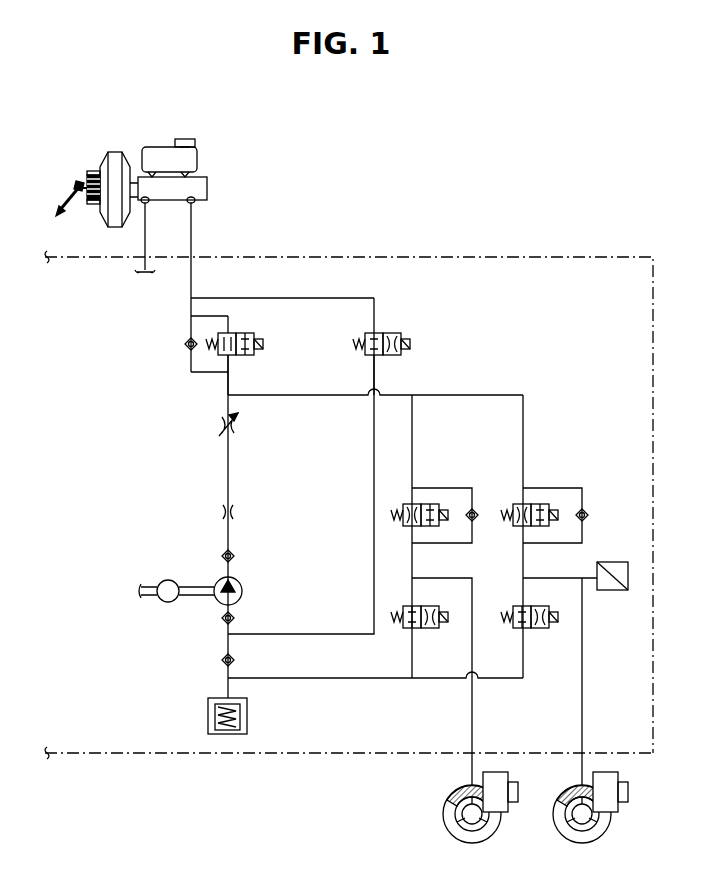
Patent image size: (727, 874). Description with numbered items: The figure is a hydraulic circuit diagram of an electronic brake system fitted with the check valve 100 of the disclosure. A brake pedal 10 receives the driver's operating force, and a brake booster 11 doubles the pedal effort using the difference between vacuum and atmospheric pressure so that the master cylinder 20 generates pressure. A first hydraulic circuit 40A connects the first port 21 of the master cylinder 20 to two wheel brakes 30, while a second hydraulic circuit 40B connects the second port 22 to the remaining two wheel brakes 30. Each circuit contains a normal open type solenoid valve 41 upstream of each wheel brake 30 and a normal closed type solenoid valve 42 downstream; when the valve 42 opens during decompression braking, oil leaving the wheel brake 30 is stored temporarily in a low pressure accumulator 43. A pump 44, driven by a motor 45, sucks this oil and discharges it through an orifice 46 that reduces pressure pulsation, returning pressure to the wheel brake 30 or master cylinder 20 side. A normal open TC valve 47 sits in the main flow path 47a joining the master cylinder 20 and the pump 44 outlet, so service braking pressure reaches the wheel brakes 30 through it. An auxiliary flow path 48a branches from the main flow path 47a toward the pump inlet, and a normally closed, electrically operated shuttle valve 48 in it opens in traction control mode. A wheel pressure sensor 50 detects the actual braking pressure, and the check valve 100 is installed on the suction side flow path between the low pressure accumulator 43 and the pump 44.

The brake pedal 10 is at (70, 201).
The brake booster 11 is at (116, 151).
The master cylinder 20 is at (207, 188).
The first port 21 is at (194, 204).
The second port 22 is at (148, 204).
The wheel brake 30 is at (490, 824).
The first hydraulic circuit 40A is at (366, 240).
The second hydraulic circuit 40B is at (66, 260).
The normal open type solenoid valve 41 is at (433, 504).
The normal closed type solenoid valve 42 is at (433, 628).
The low pressure accumulator 43 is at (208, 718).
The pump 44 is at (238, 582).
The motor 45 is at (168, 580).
The orifice 46 is at (235, 512).
The TC valve 47 is at (245, 355).
The main flow path 47a is at (228, 387).
The shuttle valve 48 is at (390, 333).
The auxiliary flow path 48a is at (375, 370).
The wheel pressure sensor 50 is at (614, 562).
The check valve 100 is at (220, 656).